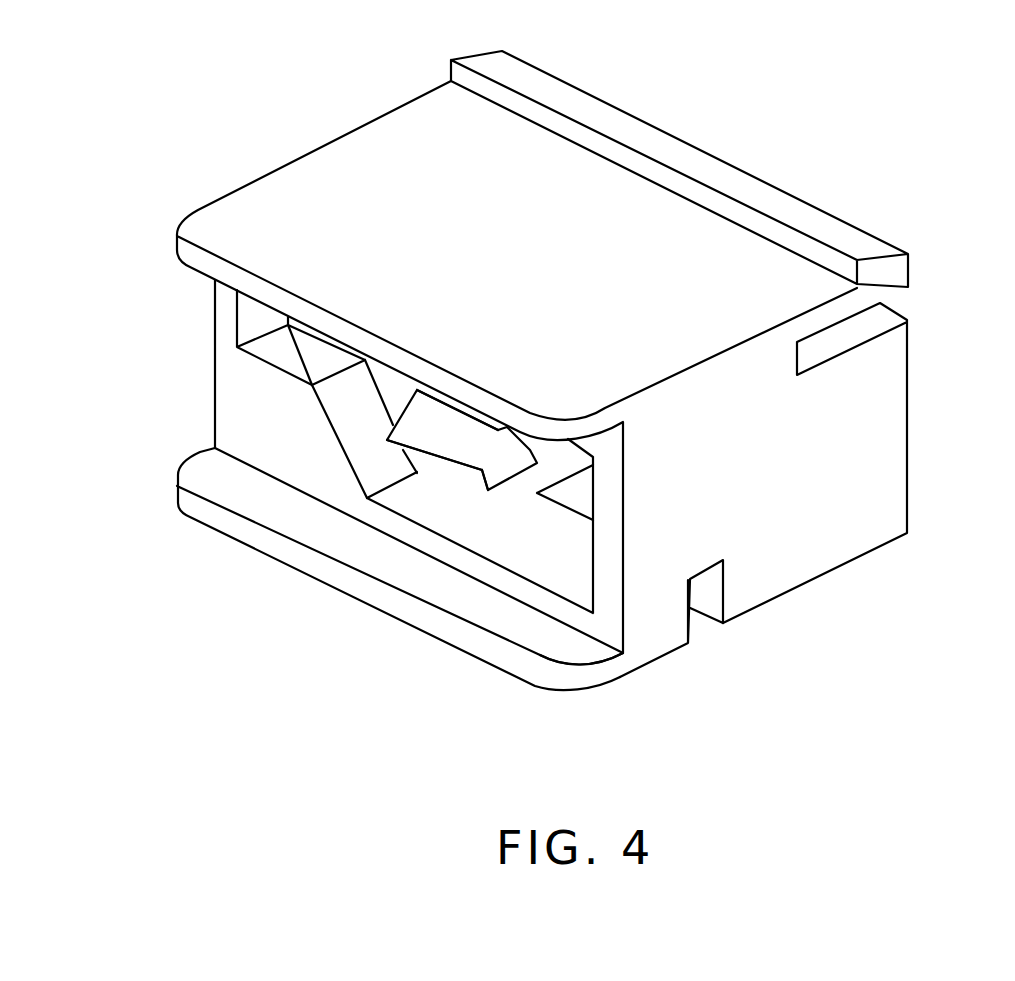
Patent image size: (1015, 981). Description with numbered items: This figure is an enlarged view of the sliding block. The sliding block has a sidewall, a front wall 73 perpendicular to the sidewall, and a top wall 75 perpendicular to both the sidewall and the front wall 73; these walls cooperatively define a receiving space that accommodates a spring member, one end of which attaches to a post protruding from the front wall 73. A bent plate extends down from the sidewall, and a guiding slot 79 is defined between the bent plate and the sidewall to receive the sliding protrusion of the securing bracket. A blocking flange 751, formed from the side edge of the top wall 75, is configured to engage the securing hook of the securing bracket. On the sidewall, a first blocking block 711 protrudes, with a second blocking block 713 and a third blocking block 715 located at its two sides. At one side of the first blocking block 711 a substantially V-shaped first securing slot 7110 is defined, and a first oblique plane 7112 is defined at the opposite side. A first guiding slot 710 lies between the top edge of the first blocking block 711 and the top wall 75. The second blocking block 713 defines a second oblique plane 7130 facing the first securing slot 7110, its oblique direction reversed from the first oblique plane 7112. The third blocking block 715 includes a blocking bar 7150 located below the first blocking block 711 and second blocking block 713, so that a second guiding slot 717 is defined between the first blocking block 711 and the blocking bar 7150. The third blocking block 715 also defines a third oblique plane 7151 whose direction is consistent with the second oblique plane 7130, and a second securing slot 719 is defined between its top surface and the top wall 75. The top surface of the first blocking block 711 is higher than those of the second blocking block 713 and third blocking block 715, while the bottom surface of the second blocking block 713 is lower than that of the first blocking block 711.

The top wall 75 is at (368, 150).
The blocking flange 751 is at (693, 163).
The front wall 73 is at (880, 425).
The guiding slot 79 is at (703, 624).
The third blocking block 715 is at (280, 450).
The first oblique plane 7112 is at (281, 448).
The second securing slot 719 is at (300, 328).
The third oblique plane 7151 is at (348, 398).
The first guiding slot 710 is at (386, 430).
The first blocking block 711 is at (453, 402).
The second guiding slot 717 is at (467, 455).
The first securing slot 7110 is at (487, 495).
The second oblique plane 7130 is at (510, 466).
The second blocking block 713 is at (576, 522).
The blocking bar 7150 is at (581, 622).